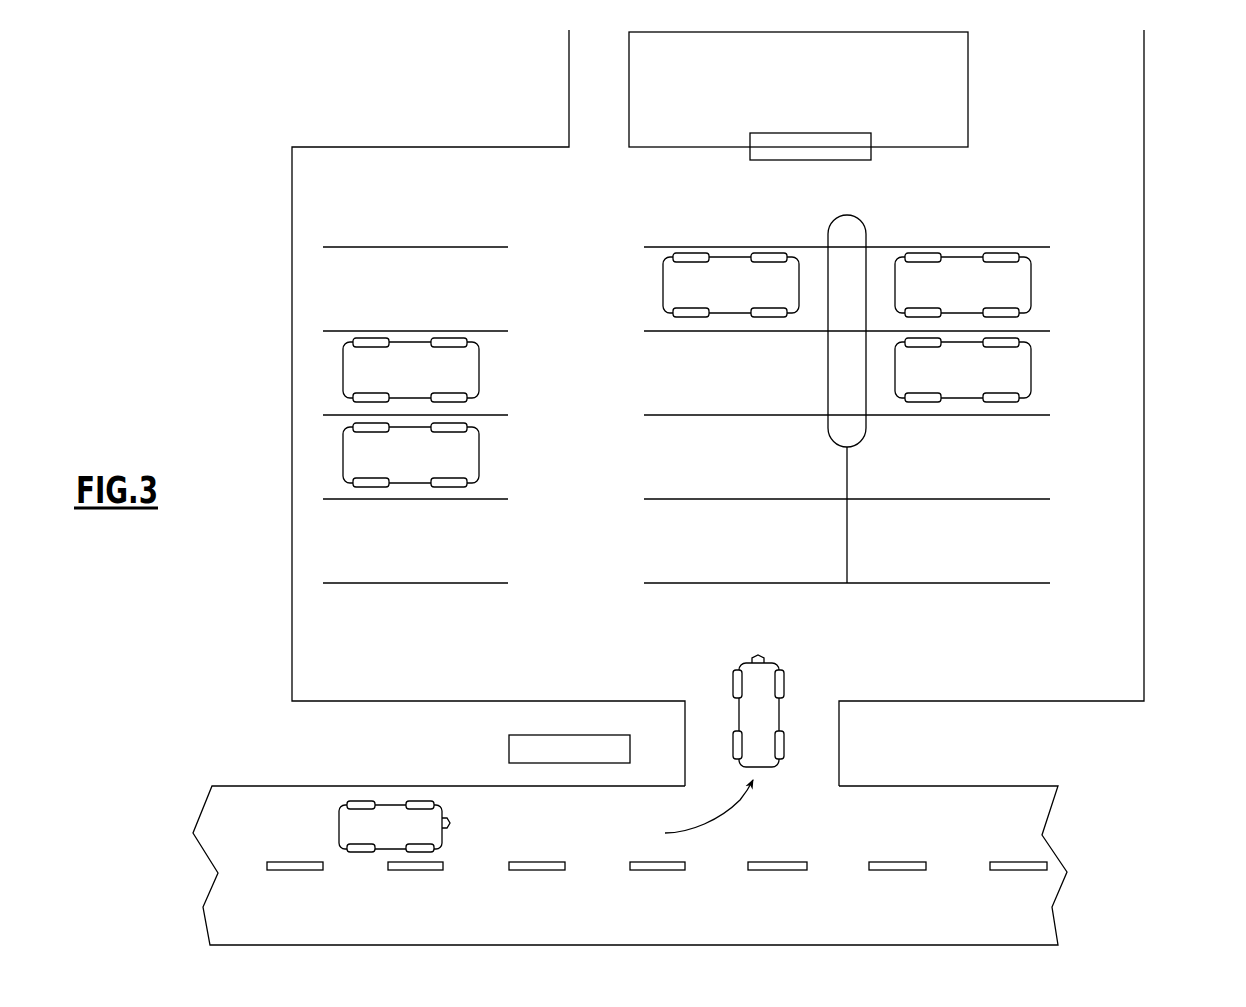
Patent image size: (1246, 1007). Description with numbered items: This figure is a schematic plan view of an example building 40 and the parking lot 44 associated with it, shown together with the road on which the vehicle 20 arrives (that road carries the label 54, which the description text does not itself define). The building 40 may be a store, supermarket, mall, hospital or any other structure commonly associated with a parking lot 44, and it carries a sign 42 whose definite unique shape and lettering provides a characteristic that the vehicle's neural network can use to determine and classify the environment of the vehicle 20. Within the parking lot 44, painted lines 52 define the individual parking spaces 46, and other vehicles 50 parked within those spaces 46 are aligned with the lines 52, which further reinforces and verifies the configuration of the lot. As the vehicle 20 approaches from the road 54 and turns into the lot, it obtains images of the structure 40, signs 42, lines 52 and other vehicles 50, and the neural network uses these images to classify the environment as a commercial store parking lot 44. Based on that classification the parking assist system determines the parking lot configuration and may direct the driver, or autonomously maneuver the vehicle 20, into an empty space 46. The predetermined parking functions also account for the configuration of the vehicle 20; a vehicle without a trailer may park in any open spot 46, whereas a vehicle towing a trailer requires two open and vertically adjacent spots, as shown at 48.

The vehicle 20 is at (780, 694).
The building 40 is at (971, 92).
The sign 42 is at (874, 137).
The parking lot 44 is at (1150, 407).
The parking space 46 is at (452, 296).
The two open and vertically adjacent spots 48 is at (918, 518).
The other vehicle 50 is at (460, 370).
The line 52 is at (478, 246).
The road 54 is at (1021, 803).